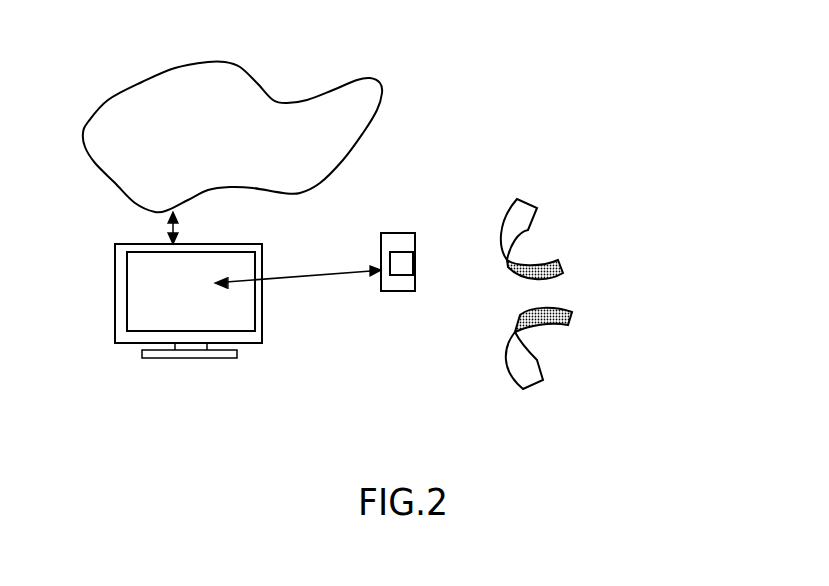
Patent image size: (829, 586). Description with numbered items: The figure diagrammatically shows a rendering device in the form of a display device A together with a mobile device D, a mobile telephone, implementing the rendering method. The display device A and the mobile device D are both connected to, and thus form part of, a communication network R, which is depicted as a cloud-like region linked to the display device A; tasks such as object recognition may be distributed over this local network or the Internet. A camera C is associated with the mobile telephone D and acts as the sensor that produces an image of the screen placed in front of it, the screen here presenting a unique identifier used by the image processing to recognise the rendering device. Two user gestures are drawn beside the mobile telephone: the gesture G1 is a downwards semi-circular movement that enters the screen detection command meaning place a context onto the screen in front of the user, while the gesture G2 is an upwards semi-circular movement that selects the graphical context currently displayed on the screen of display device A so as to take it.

The communication network R is at (232, 136).
The display device A is at (115, 291).
The camera C is at (401, 265).
The mobile device D is at (434, 264).
The gesture G1 is at (570, 327).
The gesture G2 is at (563, 273).